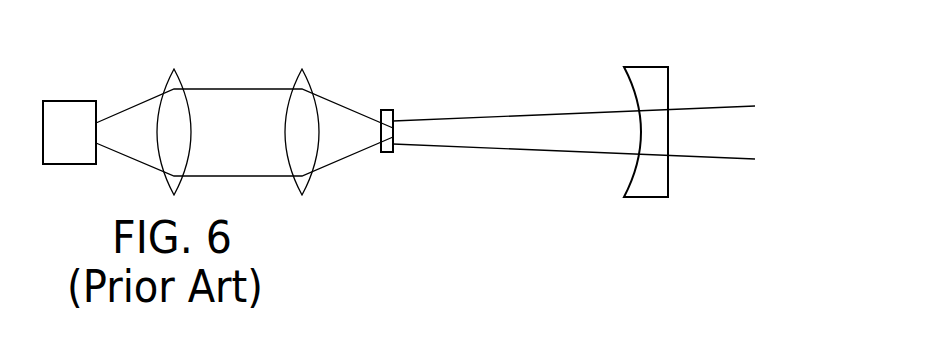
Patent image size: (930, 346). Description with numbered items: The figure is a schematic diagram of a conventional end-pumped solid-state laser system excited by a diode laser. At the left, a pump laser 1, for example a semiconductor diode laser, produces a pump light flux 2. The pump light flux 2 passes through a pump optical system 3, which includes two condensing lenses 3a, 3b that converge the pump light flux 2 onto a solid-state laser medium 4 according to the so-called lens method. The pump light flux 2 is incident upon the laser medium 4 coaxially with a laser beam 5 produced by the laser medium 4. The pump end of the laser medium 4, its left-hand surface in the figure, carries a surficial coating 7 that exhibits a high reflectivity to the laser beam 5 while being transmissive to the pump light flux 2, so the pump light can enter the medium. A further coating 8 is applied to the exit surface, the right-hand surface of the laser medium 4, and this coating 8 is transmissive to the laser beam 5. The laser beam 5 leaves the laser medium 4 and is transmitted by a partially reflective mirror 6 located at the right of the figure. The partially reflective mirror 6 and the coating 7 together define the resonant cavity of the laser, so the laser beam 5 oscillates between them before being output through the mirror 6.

The pump laser 1 is at (69, 108).
The pump light flux 2 is at (136, 117).
The pump optical system 3 is at (238, 97).
The condensing lens 3a is at (182, 78).
The condensing lens 3b is at (293, 76).
The solid-state laser medium 4 is at (387, 108).
The laser beam 5 is at (522, 125).
The partially reflective mirror 6 is at (648, 67).
The surficial coating 7 is at (380, 148).
The coating 8 is at (394, 143).